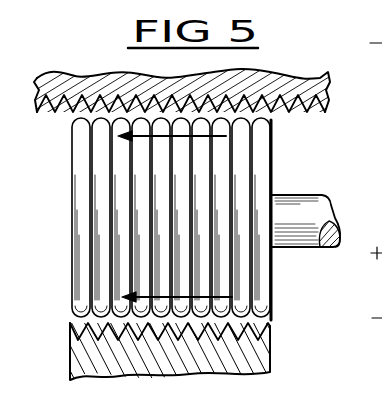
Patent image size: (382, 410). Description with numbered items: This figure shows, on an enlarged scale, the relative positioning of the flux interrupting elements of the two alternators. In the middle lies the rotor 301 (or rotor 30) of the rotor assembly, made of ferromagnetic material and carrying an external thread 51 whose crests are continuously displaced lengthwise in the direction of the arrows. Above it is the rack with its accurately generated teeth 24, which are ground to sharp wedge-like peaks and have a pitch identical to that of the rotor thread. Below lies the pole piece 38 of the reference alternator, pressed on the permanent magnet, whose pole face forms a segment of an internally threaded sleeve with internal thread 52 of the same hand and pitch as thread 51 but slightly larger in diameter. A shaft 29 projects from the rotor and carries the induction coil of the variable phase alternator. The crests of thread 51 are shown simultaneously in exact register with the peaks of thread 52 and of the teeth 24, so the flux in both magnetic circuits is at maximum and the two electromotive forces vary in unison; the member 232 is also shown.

The upper toothed member 232 is at (326, 61).
The teeth 24 is at (58, 105).
The rotor 301 is at (248, 280).
The rotor 30 is at (220, 224).
The thread 51 is at (270, 132).
The shaft 29 is at (284, 205).
The pole piece 38 is at (80, 362).
The internal thread 52 is at (74, 327).